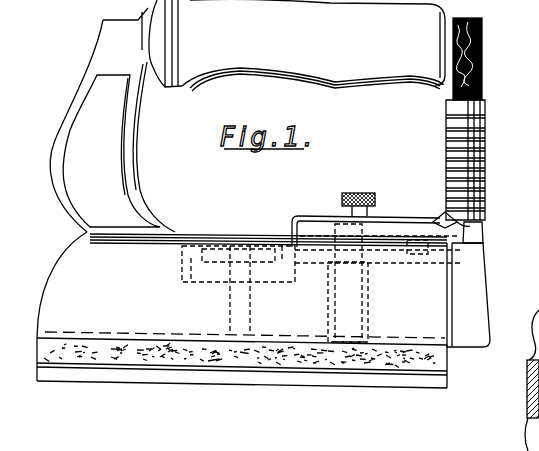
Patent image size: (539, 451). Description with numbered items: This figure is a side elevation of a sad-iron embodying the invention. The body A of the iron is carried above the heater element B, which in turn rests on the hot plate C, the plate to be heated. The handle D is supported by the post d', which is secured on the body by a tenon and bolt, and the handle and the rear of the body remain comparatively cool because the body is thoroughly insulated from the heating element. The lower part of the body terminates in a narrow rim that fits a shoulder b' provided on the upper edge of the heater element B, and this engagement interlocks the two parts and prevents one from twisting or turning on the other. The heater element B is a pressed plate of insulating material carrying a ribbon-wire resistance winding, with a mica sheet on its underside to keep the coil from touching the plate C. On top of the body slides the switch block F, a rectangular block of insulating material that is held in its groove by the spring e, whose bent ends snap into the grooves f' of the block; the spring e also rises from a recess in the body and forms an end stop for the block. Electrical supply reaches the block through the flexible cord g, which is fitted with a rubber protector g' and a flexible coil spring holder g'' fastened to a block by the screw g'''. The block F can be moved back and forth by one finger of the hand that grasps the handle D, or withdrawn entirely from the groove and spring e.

The handle D is at (274, 45).
The post d' is at (112, 126).
The body A is at (244, 289).
The heater element B is at (100, 352).
The shoulder b' is at (38, 383).
The hot plate C is at (212, 380).
The spring e is at (366, 209).
The conductor connection e' is at (238, 266).
The switch block F is at (355, 230).
The grooves f' is at (479, 213).
The flexible cord g is at (482, 119).
The rubber protector g' is at (504, 120).
The flexible coil spring holder g'' is at (508, 160).
The screw g''' is at (401, 185).